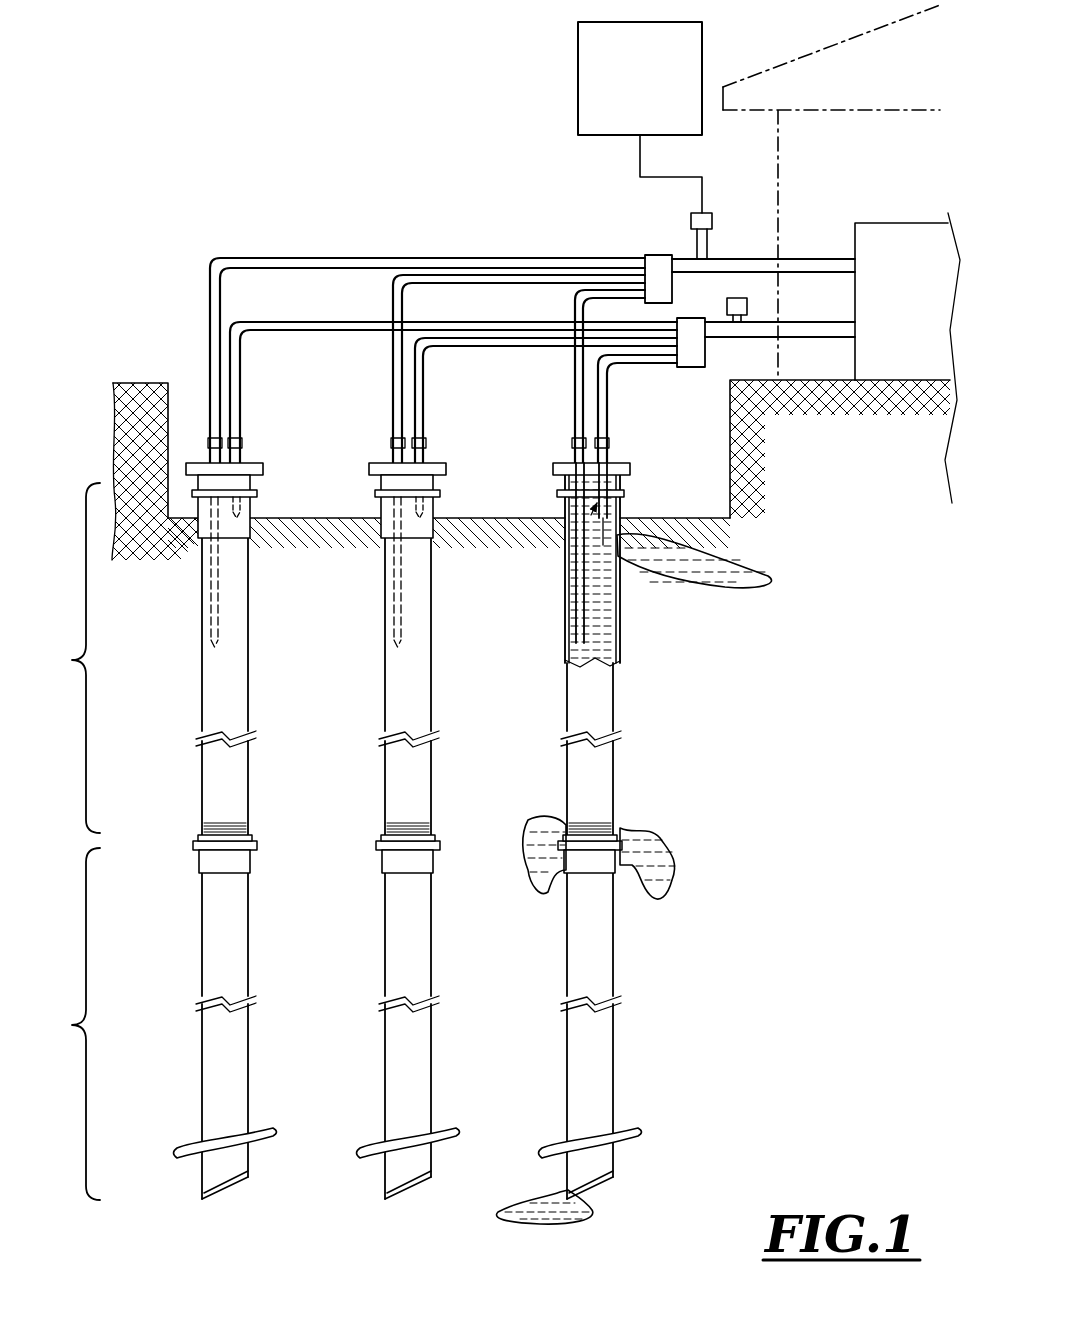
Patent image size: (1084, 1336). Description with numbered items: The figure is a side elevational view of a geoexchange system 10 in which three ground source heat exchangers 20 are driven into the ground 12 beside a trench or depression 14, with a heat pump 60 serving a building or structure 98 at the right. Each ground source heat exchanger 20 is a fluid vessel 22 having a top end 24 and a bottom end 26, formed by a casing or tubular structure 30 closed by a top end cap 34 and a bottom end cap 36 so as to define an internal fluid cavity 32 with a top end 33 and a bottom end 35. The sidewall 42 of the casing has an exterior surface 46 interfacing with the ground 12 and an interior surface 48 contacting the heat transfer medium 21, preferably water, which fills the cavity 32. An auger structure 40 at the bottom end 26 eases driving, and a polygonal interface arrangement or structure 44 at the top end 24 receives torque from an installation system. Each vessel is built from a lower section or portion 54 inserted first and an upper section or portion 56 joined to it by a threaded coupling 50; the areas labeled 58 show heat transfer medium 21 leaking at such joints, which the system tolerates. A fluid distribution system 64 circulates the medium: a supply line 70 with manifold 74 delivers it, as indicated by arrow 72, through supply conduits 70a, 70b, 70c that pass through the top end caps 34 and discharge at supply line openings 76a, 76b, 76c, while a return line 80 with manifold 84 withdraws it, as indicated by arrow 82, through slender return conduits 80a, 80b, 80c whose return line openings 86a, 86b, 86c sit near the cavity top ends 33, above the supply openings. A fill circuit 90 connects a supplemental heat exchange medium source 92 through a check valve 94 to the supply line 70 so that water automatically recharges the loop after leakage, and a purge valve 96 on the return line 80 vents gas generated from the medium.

The geoexchange system 10 is at (200, 185).
The ground 12 is at (142, 380).
The trench or depression 14 is at (185, 520).
The ground source heat exchanger 20 is at (405, 855).
The heat transfer medium 21 is at (567, 568).
The fluid vessel 22 is at (204, 767).
The top end 24 is at (268, 510).
The bottom end 26 is at (437, 1149).
The casing or tubular structure 30 is at (204, 711).
The internal fluid cavity 32 is at (232, 606).
The top end of the cavity 33 is at (573, 557).
The top end cap 34 is at (262, 465).
The bottom end of the cavity 35 is at (605, 1090).
The bottom end cap 36 is at (230, 1195).
The auger structure 40 is at (272, 1133).
The sidewall 42 is at (620, 620).
The interface arrangement or structure 44 is at (258, 493).
The exterior surface 46 is at (238, 818).
The interior surface 48 is at (602, 650).
The coupling 50 is at (198, 817).
The lower section or portion 54 is at (70, 1024).
The upper section or portion 56 is at (70, 658).
The areas of leaking heat transfer medium 58 is at (698, 570).
The heat pump 60 is at (900, 222).
The fluid distribution system 64 is at (328, 240).
The supply line 70 is at (176, 250).
The fluid supply conduit 70a is at (210, 282).
The fluid supply conduit 70b is at (393, 295).
The fluid supply conduit 70c is at (575, 308).
The supply flow arrow 72 is at (820, 232).
The manifold 74 is at (660, 256).
The supply line opening 76a is at (212, 648).
The supply line opening 76b is at (395, 648).
The supply line opening 76c is at (577, 647).
The return line 80 is at (728, 360).
The fluid return conduit 80a is at (293, 332).
The fluid return conduit 80b is at (480, 349).
The fluid return conduit 80c is at (662, 365).
The return flow arrow 82 is at (836, 322).
The manifold 84 is at (693, 368).
The return line opening 86a is at (238, 518).
The return line opening 86b is at (421, 518).
The return line opening 86c is at (600, 560).
The fill circuit 90 is at (590, 165).
The supplemental heat exchange medium source 92 is at (703, 38).
The check valve 94 is at (712, 223).
The purge valve 96 is at (736, 298).
The building or structure 98 is at (776, 170).